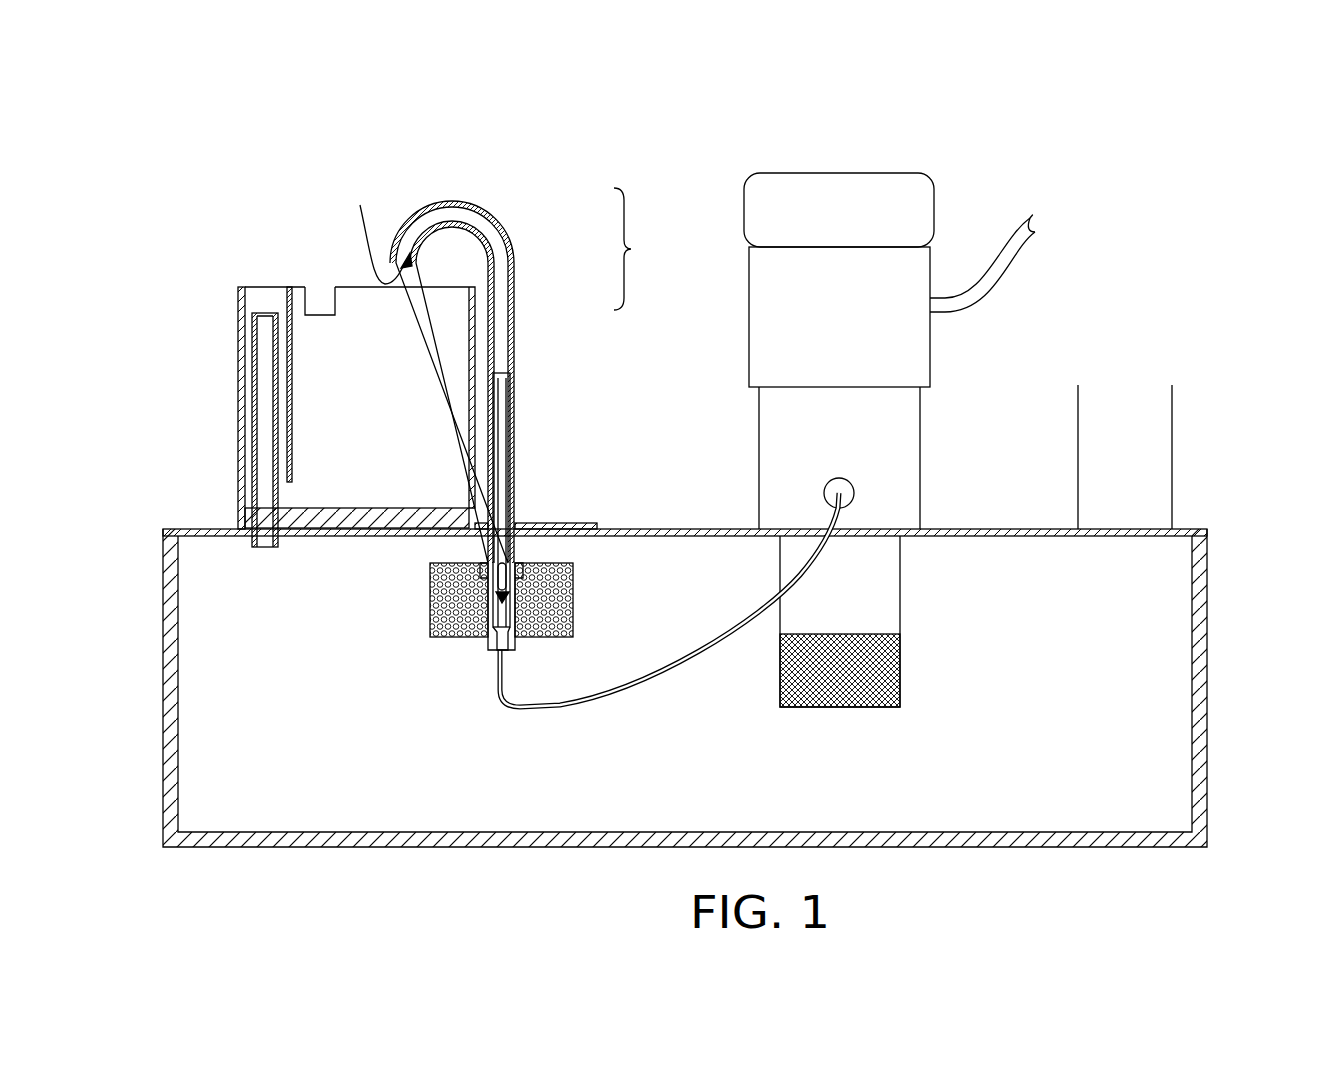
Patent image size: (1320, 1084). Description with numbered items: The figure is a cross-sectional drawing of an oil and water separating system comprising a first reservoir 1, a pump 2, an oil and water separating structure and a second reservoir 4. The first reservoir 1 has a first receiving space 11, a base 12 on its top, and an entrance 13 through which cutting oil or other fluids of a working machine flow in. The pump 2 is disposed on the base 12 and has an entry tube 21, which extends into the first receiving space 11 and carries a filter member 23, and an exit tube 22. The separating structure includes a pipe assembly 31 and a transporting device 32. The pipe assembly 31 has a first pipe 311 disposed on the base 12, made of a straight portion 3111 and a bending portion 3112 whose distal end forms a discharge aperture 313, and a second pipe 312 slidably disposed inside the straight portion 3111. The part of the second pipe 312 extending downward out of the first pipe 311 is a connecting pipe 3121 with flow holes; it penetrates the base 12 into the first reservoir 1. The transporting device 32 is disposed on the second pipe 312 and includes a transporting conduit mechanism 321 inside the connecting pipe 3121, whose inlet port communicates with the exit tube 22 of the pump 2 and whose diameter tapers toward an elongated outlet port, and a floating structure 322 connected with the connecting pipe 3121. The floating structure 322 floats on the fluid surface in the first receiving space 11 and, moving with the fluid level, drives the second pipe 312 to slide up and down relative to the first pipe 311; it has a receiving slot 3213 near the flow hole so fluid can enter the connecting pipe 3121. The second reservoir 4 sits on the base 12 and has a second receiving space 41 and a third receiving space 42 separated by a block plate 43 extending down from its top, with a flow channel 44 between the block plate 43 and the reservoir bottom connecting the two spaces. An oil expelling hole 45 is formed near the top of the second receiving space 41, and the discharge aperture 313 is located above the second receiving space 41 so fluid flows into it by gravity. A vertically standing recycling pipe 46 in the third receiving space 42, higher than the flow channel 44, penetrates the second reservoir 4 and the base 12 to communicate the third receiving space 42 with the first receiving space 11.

The first reservoir 1 is at (1200, 635).
The first receiving space 11 is at (1172, 718).
The base 12 is at (1018, 529).
The entrance 13 is at (1143, 395).
The pump 2 is at (887, 190).
The entry tube 21 is at (885, 580).
The exit tube 22 is at (553, 708).
The filter member 23 is at (873, 710).
The pipe assembly 31 is at (509, 379).
The first pipe 311 is at (533, 375).
The straight portion 3111 is at (518, 307).
The bending portion 3112 is at (455, 203).
The second pipe 312 is at (559, 511).
The connecting pipe 3121 is at (503, 575).
The discharge aperture 313 is at (416, 196).
The transporting device 32 is at (416, 687).
The transporting conduit mechanism 321 is at (583, 561).
The receiving slot 3213 is at (517, 570).
The floating structure 322 is at (455, 630).
The second reservoir 4 is at (372, 361).
The second receiving space 41 is at (357, 300).
The third receiving space 42 is at (263, 302).
The block plate 43 is at (290, 372).
The flow channel 44 is at (288, 495).
The oil expelling hole 45 is at (320, 300).
The recycling pipe 46 is at (253, 405).